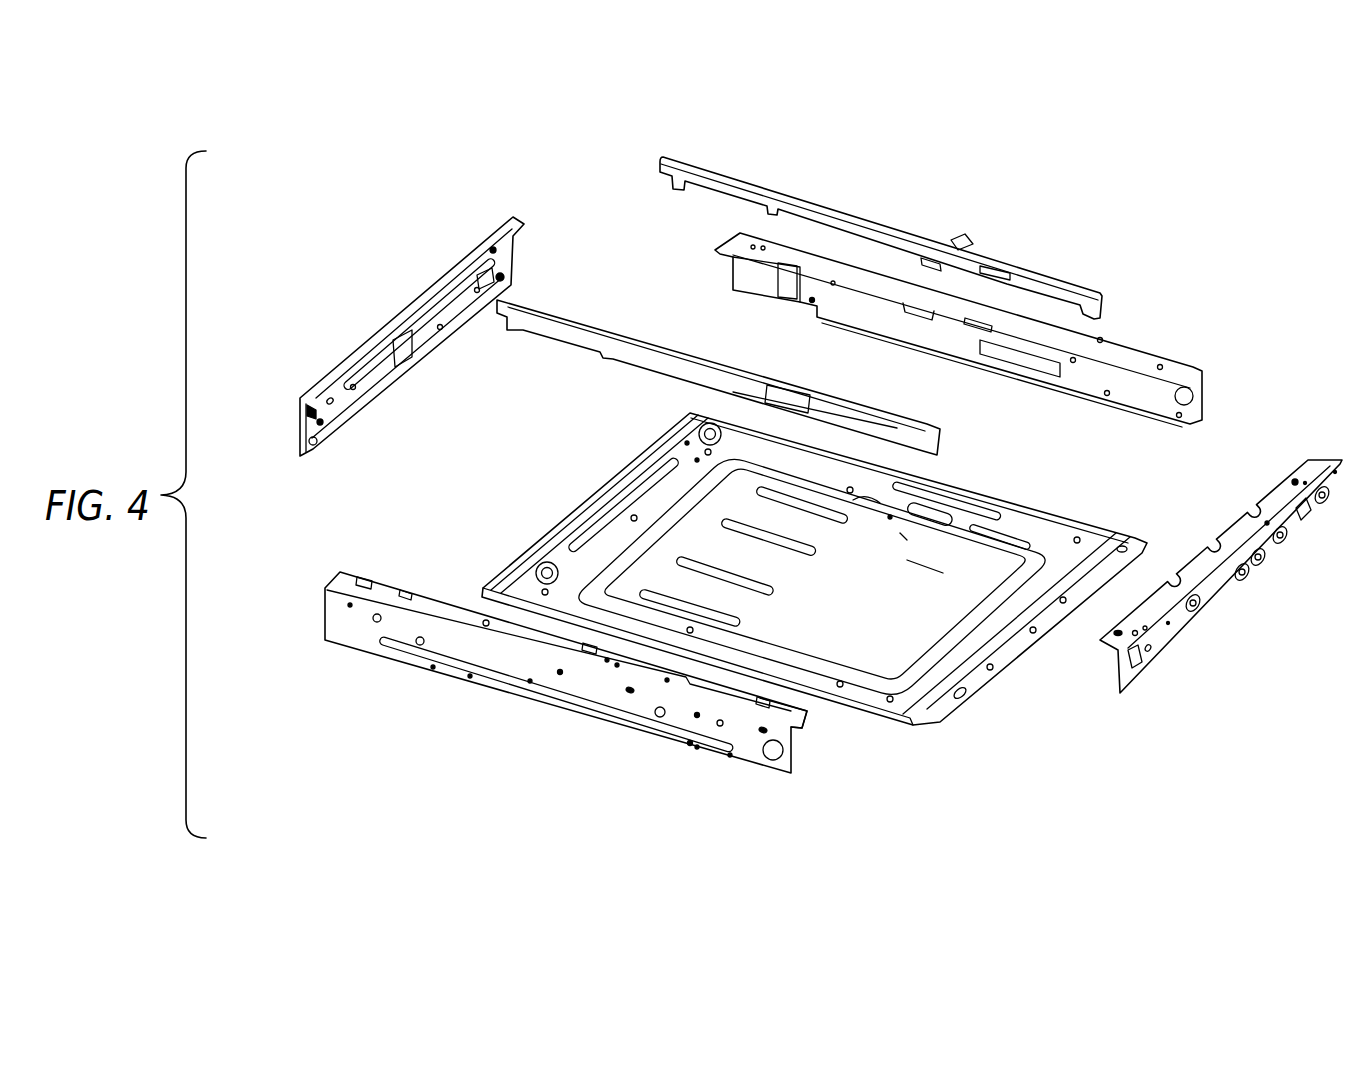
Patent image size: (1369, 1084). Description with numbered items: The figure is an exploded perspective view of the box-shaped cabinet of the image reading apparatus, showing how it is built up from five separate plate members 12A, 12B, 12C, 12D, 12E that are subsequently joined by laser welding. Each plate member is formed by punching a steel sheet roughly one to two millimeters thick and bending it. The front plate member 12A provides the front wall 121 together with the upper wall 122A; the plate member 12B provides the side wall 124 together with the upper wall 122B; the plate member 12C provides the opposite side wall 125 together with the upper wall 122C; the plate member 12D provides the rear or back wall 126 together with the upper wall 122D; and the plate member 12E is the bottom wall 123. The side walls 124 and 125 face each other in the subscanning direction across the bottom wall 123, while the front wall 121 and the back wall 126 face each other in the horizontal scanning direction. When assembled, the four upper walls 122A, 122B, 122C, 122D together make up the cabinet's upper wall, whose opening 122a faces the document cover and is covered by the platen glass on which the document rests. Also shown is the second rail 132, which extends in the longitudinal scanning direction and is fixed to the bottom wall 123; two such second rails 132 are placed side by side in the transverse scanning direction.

The plate member 12A is at (567, 729).
The plate member 12B is at (377, 315).
The plate member 12C is at (1265, 588).
The plate member 12D is at (1122, 308).
The plate member 12E is at (975, 712).
The front wall 121 is at (750, 763).
The upper wall 122A is at (340, 577).
The opening 122a is at (800, 720).
The upper wall 122B is at (357, 363).
The upper wall 122C is at (1313, 462).
The upper wall 122D is at (1172, 370).
The bottom wall 123 is at (930, 722).
The side wall 124 is at (302, 432).
The side wall 125 is at (1210, 603).
The back wall 126 is at (1190, 410).
The second rail 132 is at (569, 315).